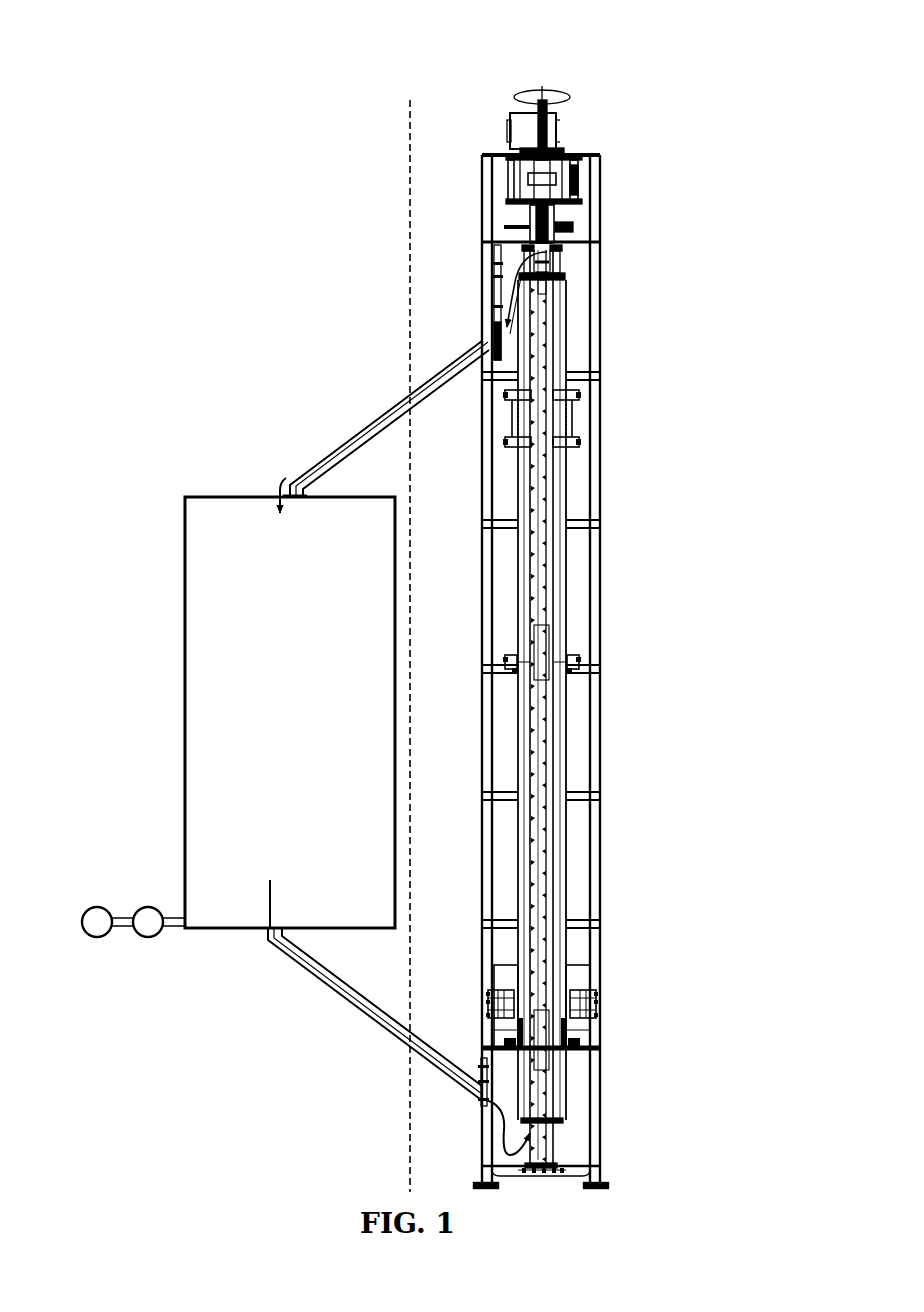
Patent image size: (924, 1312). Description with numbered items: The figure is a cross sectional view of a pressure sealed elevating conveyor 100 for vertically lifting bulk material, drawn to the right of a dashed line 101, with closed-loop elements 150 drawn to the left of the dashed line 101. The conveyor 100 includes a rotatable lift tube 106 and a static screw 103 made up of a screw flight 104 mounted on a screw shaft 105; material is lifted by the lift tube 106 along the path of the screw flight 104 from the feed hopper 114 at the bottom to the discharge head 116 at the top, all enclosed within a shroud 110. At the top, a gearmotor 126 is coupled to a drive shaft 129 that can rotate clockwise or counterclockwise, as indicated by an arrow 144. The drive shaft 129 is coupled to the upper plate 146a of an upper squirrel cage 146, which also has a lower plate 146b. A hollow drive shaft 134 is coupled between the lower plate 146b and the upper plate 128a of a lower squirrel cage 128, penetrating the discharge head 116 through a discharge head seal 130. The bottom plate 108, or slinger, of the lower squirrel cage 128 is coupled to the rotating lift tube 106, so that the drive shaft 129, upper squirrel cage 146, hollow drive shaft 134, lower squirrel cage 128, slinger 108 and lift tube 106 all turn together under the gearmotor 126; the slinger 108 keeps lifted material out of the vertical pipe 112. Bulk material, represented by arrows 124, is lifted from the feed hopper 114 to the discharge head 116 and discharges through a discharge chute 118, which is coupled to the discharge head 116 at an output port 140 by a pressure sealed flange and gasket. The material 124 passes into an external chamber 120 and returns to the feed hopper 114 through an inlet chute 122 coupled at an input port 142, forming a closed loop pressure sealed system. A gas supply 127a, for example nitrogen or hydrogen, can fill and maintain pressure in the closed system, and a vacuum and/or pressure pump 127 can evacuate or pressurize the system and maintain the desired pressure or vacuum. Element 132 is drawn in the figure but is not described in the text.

The pressure sealed elevating conveyor 100 is at (500, 19).
The dashed line 101 is at (389, 613).
The static screw 103 is at (825, 657).
The screw flight 104 is at (649, 709).
The screw shaft 105 is at (598, 654).
The rotatable lift tube 106 is at (655, 705).
The bottom plate 108 is at (654, 318).
The shroud 110 is at (623, 671).
The vertical pipe 112 is at (645, 698).
The feed hopper 114 is at (681, 1116).
The discharge head 116 is at (655, 351).
The discharge chute 118 is at (278, 388).
The external chamber 120 is at (226, 712).
The inlet chute 122 is at (270, 1033).
The bulk material 124 is at (345, 702).
The gearmotor 126 is at (492, 103).
The vacuum and/or pressure pump 127 is at (121, 848).
The gas supply 127a is at (94, 887).
The lower squirrel cage 128 is at (648, 289).
The upper plate of the lower squirrel cage 128a is at (649, 262).
The drive shaft 129 is at (646, 82).
The discharge head seal 130 is at (650, 205).
The support plate 132 is at (503, 130).
The hollow drive shaft 134 is at (489, 218).
The output port 140 is at (486, 302).
The input port 142 is at (453, 1095).
The arrow 144 is at (559, 95).
The upper squirrel cage 146 is at (639, 153).
The upper plate of the upper squirrel cage 146a is at (673, 126).
The lower plate of the upper squirrel cage 146b is at (640, 190).
The elements 150 is at (258, 19).